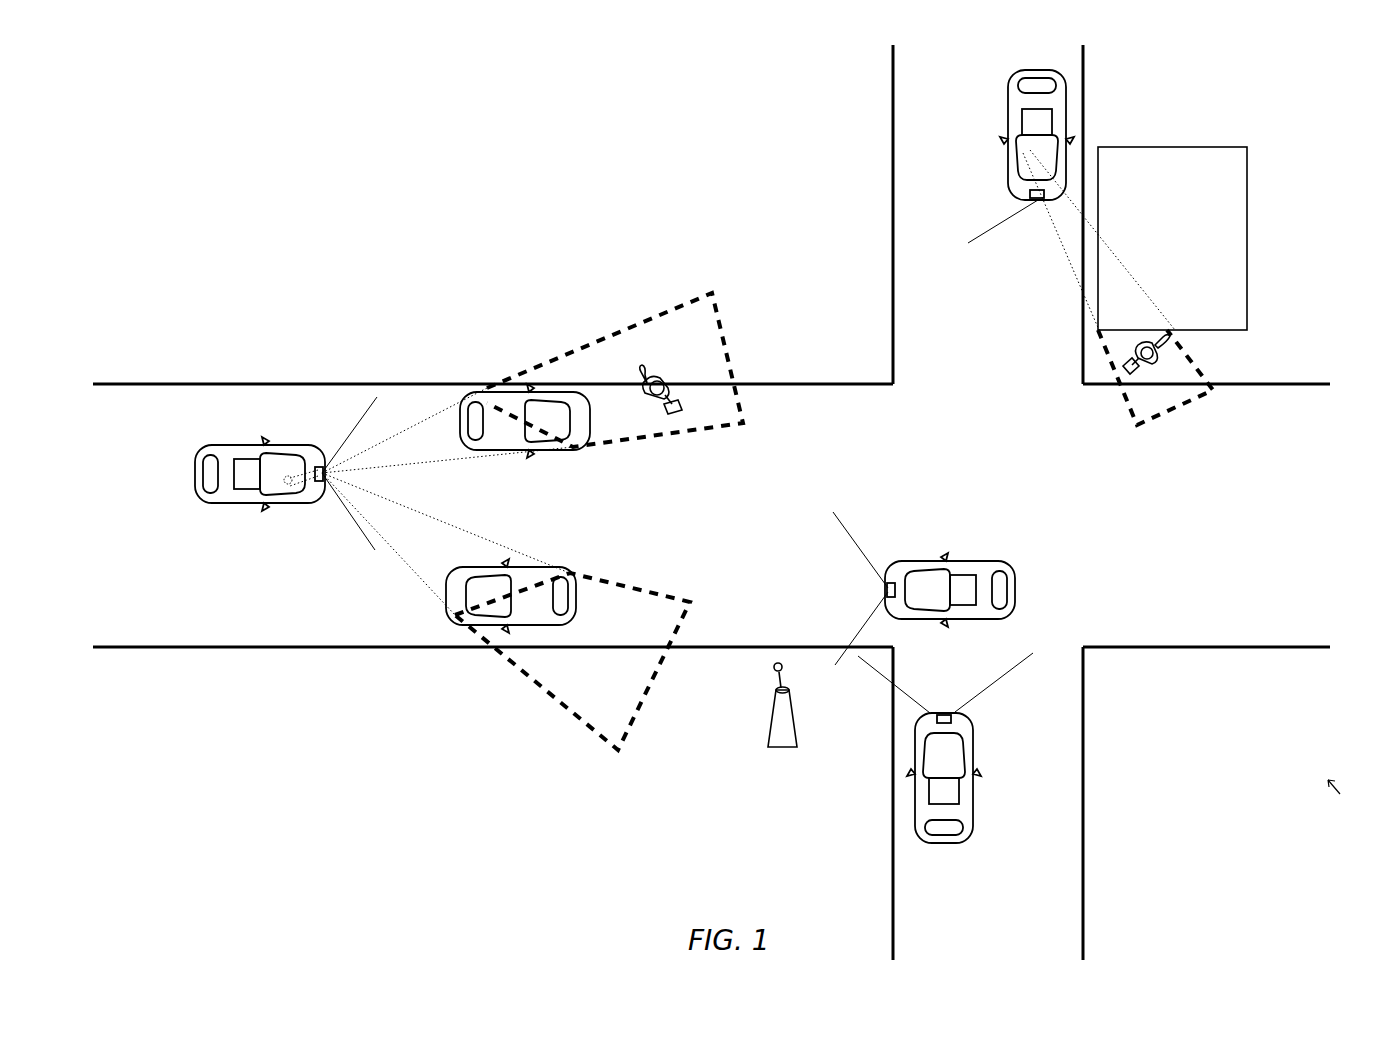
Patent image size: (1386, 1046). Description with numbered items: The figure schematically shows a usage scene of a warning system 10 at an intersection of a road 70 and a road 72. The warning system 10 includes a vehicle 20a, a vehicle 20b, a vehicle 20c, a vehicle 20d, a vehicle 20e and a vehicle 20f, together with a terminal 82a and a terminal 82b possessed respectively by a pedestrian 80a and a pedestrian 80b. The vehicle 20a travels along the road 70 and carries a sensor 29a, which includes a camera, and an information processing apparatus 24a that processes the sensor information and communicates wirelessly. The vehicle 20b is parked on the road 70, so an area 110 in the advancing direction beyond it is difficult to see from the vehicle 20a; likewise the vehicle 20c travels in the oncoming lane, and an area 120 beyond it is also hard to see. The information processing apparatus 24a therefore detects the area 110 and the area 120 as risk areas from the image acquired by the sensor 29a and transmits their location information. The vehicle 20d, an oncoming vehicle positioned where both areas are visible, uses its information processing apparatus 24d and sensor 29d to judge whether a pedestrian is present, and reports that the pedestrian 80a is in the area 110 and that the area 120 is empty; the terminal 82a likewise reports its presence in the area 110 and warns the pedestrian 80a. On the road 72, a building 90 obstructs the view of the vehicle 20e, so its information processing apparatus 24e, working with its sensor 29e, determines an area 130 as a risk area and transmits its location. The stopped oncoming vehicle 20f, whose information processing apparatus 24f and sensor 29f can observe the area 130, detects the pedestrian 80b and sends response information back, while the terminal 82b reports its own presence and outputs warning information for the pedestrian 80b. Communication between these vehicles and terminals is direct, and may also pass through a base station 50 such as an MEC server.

The warning system 10 is at (1349, 795).
The vehicle 20a is at (200, 486).
The vehicle 20b is at (467, 432).
The vehicle 20c is at (446, 600).
The vehicle 20d is at (1017, 596).
The vehicle 20e is at (1010, 90).
The vehicle 20f is at (945, 843).
The information processing apparatus 24a is at (250, 490).
The information processing apparatus 24d is at (966, 575).
The information processing apparatus 24e is at (1020, 122).
The information processing apparatus 24f is at (962, 790).
The sensor 29a is at (320, 462).
The sensor 29d is at (884, 590).
The sensor 29e is at (1040, 205).
The sensor 29f is at (944, 713).
The base station 50 is at (768, 684).
The road 70 is at (711, 515).
The road 72 is at (988, 502).
The pedestrian 80a is at (666, 372).
The pedestrian 80b is at (1160, 360).
The terminal 82a is at (675, 414).
The terminal 82b is at (1126, 372).
The building 90 is at (1208, 147).
The area 110 is at (733, 352).
The area 120 is at (572, 722).
The area 130 is at (1160, 422).